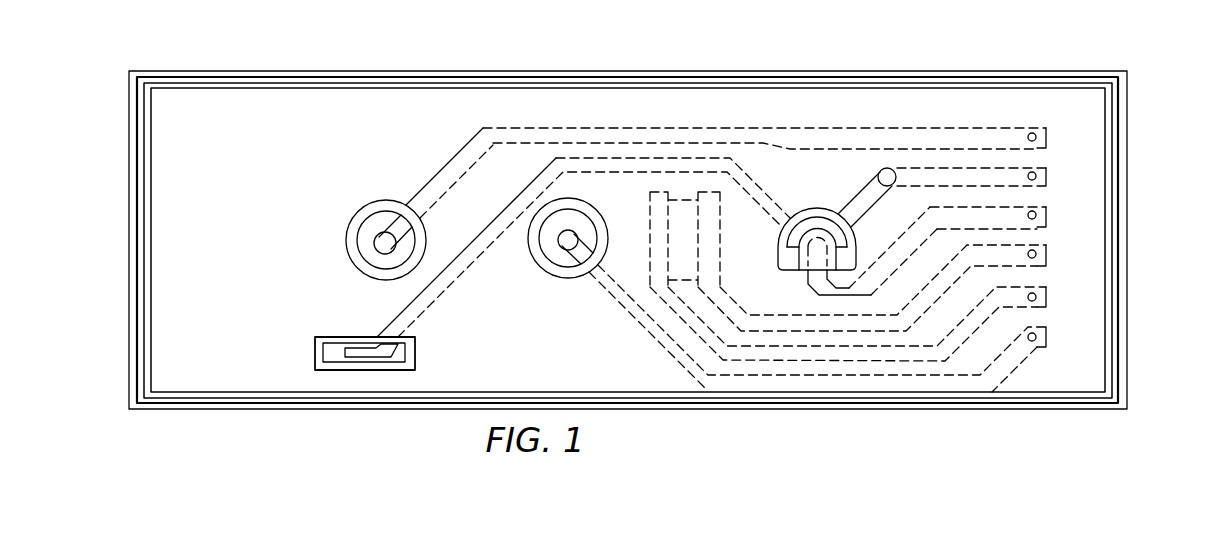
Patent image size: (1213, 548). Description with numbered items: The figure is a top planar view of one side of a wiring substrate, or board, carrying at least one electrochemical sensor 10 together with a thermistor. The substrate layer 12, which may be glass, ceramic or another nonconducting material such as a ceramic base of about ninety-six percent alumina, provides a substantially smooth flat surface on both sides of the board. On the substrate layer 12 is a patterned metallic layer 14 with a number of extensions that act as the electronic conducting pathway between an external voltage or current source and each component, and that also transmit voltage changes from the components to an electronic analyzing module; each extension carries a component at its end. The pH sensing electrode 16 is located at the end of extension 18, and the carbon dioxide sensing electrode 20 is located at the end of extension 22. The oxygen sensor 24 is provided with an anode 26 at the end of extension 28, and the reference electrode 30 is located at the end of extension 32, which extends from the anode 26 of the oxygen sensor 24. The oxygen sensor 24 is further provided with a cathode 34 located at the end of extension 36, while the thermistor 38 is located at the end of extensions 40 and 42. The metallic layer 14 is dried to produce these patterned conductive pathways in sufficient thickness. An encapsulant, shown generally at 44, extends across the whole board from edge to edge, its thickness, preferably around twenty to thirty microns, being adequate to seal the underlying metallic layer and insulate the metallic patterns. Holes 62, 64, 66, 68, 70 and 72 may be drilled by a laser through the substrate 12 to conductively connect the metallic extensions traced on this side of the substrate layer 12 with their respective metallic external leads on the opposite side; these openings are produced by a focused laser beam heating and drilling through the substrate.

The electrochemical sensor 10 is at (1137, 58).
The substrate layer 12 is at (1128, 95).
The patterned metallic layer 14 is at (972, 128).
The pH sensing electrode 16 is at (552, 254).
The extension 18 is at (608, 297).
The carbon dioxide sensing electrode 20 is at (346, 224).
The extension 22 is at (515, 128).
The oxygen sensor 24 is at (830, 207).
The anode 26 is at (803, 222).
The extension 28 is at (958, 170).
The reference electrode 30 is at (362, 352).
The extension 32 is at (511, 217).
The cathode 34 is at (818, 245).
The extension 36 is at (975, 212).
The thermistor 38 is at (700, 254).
The extension 40 is at (993, 243).
The extension 42 is at (1012, 290).
The encapsulant 44 is at (240, 95).
The hole 62 is at (1048, 136).
The hole 64 is at (1047, 177).
The hole 66 is at (1047, 216).
The hole 68 is at (1047, 255).
The hole 70 is at (1047, 298).
The hole 72 is at (1047, 340).